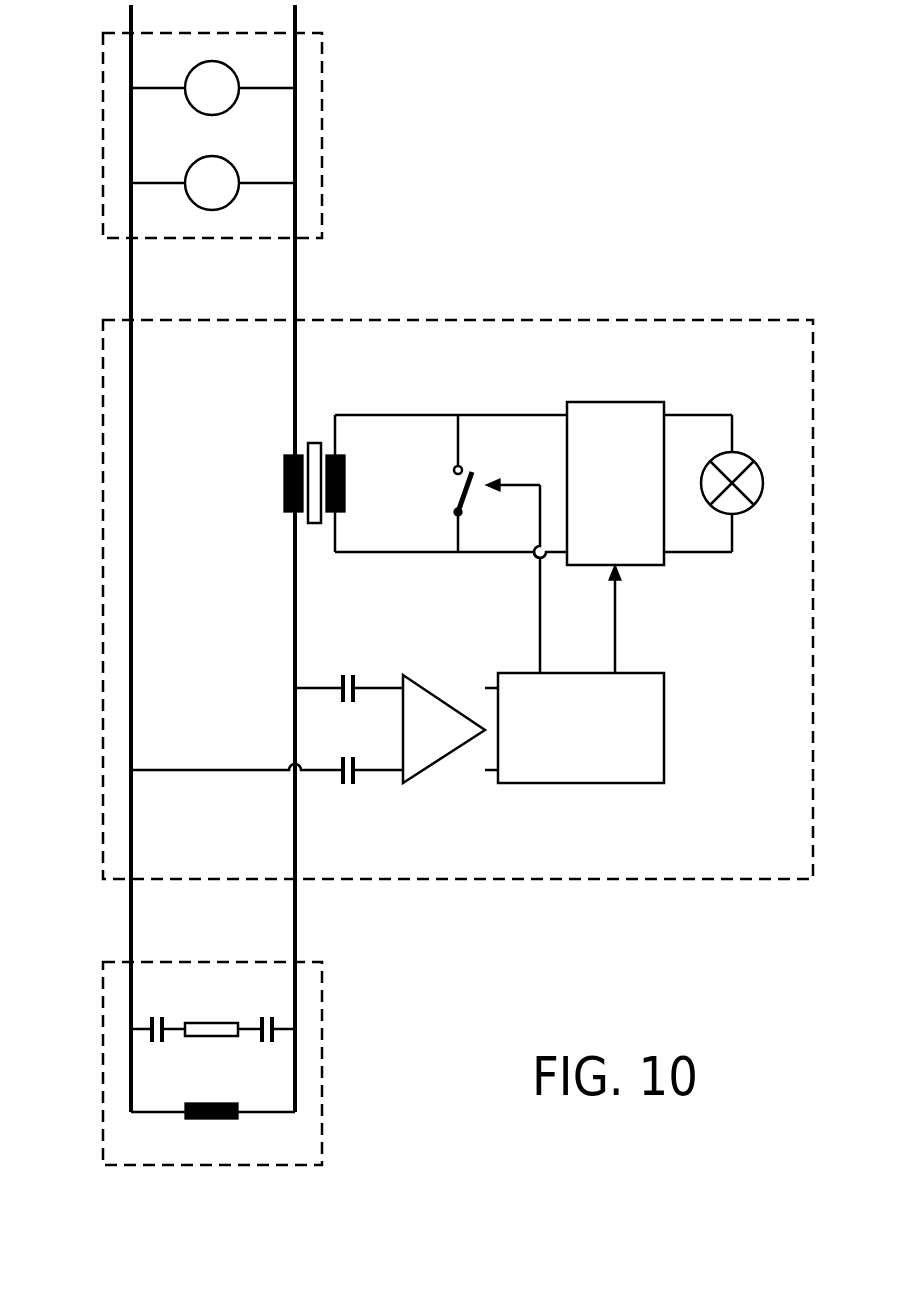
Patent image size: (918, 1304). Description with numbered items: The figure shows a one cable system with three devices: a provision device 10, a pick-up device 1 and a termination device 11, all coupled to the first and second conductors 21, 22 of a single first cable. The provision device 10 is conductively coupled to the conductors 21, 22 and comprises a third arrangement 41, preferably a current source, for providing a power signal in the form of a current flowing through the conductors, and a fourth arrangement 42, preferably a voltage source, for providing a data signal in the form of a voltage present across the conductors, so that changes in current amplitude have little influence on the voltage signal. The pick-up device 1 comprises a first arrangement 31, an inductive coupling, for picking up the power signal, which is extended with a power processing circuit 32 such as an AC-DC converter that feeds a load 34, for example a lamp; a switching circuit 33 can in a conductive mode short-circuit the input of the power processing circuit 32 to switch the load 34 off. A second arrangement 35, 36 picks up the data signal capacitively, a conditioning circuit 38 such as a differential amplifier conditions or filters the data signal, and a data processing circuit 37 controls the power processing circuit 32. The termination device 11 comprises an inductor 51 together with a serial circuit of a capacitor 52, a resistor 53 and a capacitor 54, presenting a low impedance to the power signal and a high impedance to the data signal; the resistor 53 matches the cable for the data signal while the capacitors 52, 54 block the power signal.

The pick-up device 1 is at (103, 590).
The provision device 10 is at (103, 135).
The termination device 11 is at (103, 1070).
The first conductor 21 is at (131, 285).
The second conductor 22 is at (295, 285).
The first arrangement 31 is at (345, 478).
The power processing circuit 32 is at (615, 537).
The switching circuit 33 is at (455, 492).
The load 34 is at (748, 454).
The second arrangement 35 is at (348, 675).
The second arrangement 36 is at (348, 784).
The data processing circuit 37 is at (574, 728).
The conditioning circuit 38 is at (444, 729).
The third arrangement 41 is at (228, 64).
The fourth arrangement 42 is at (228, 159).
The inductor 51 is at (210, 1119).
The capacitor 52 is at (157, 1013).
The resistor 53 is at (210, 1036).
The capacitor 54 is at (267, 1013).